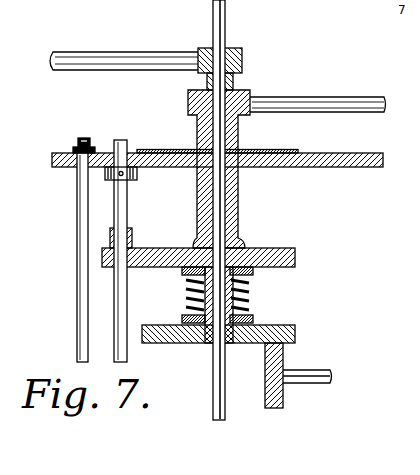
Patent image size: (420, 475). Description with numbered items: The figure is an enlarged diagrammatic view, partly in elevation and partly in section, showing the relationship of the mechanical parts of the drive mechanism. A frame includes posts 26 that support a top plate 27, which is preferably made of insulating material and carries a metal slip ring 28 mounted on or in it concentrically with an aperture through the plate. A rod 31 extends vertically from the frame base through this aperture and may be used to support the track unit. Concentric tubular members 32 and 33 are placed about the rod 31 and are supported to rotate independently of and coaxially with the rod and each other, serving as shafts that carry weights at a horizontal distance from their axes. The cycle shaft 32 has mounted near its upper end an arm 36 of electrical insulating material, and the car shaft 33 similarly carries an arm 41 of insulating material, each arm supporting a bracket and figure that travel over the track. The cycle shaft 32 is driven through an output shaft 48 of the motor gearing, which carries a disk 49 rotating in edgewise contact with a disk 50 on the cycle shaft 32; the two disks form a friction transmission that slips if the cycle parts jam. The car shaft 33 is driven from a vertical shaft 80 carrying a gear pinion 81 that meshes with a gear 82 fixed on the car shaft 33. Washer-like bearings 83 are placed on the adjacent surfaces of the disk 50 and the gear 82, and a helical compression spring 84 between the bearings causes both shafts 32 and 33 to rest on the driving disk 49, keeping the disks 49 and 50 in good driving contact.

The posts 26 is at (77, 165).
The top plate 27 is at (383, 159).
The metal slip ring 28 is at (178, 150).
The rod 31 is at (225, 6).
The tubular member (cycle shaft) 32 is at (210, 48).
The tubular member (car shaft) 33 is at (240, 140).
The arm 36 is at (100, 70).
The arm 41 is at (330, 112).
The output shaft 48 is at (310, 370).
The disk 49 is at (268, 408).
The disk 50 is at (295, 333).
The vertical shaft 80 is at (118, 140).
The gear pinion 81 is at (133, 240).
The gear 82 is at (160, 248).
The washer-like bearings 83 is at (252, 273).
The helical compression spring 84 is at (186, 292).